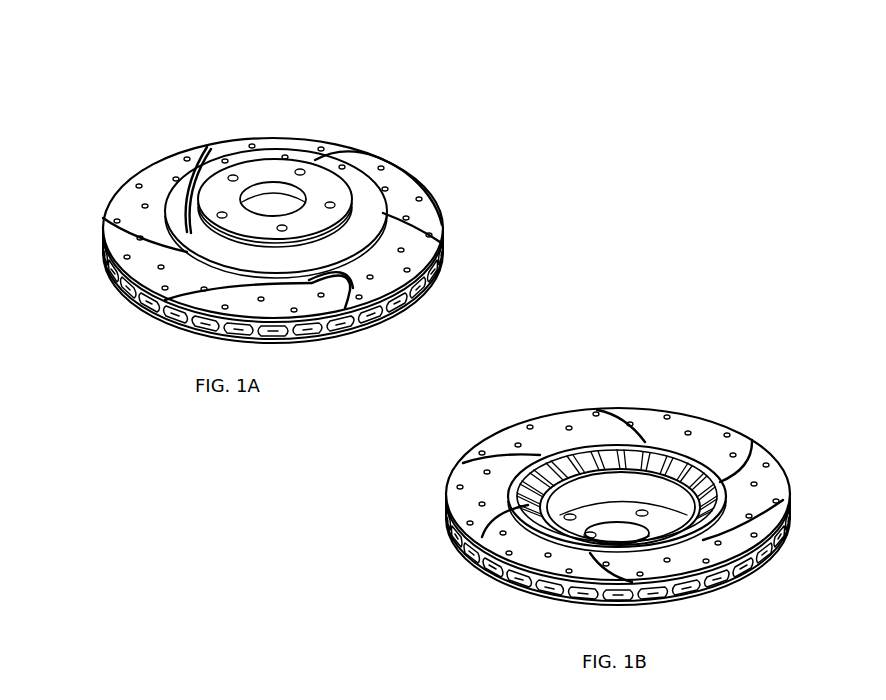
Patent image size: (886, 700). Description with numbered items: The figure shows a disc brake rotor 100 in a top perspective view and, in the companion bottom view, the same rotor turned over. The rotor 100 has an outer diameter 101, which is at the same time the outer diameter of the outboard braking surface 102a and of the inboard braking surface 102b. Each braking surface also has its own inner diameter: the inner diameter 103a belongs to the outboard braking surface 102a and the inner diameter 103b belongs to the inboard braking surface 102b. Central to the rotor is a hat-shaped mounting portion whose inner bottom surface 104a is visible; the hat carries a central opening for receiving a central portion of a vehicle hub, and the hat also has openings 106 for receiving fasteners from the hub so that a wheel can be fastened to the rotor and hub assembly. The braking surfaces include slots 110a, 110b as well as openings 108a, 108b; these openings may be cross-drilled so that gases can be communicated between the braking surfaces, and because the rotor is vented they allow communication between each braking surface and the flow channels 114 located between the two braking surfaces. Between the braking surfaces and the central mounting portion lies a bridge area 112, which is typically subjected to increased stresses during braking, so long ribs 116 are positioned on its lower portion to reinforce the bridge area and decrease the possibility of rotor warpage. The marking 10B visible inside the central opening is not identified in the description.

In FIG. 1A, the disc brake rotor 100 is at (498, 233).
In FIG. 1B, the disc brake rotor 100 is at (802, 592).
In FIG. 1A, the outer diameter 101 is at (423, 182).
In FIG. 1B, the outer diameter 101 is at (777, 458).
In FIG. 1A, the outboard braking surface 102a is at (145, 182).
In FIG. 1B, the inboard braking surface 102b is at (730, 437).
In FIG. 1A, the inner diameter 103a is at (310, 282).
In FIG. 1B, the inner diameter 103b is at (638, 550).
In FIG. 1A, the inner bottom surface 104a is at (255, 173).
In FIG. 1B, the inner bottom surface 104a is at (607, 532).
In FIG. 1A, the openings 106 is at (305, 142).
In FIG. 1A, the openings 108a is at (263, 142).
In FIG. 1B, the openings 108b is at (547, 420).
In FIG. 1A, the slots 110a is at (103, 220).
In FIG. 1B, the slots 110b is at (488, 457).
In FIG. 1A, the bridge area 112 is at (357, 253).
In FIG. 1A, the flow channels 114 is at (173, 316).
In FIG. 1B, the flow channels 114 is at (493, 570).
In FIG. 1B, the long ribs 116 is at (728, 492).
In FIG. 1A, the center bore 10B is at (278, 214).